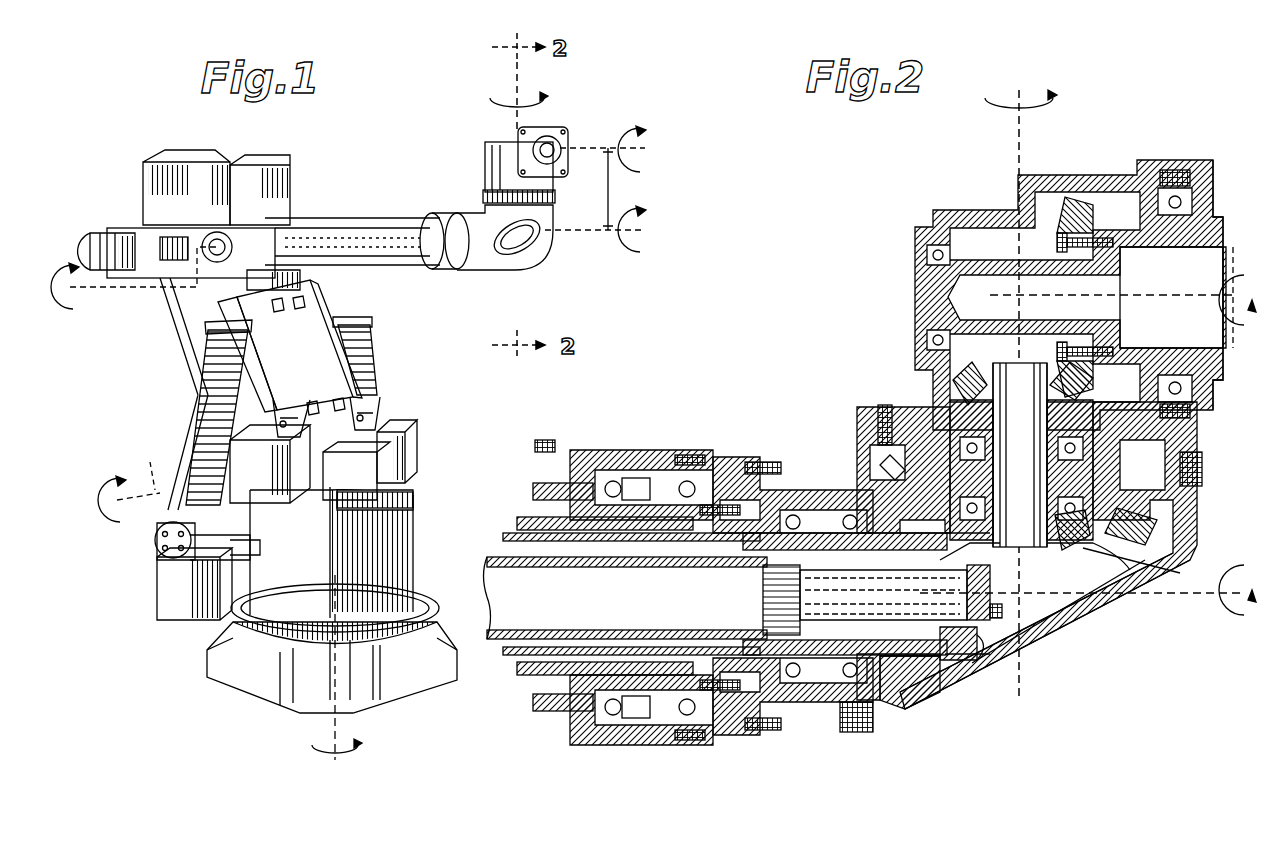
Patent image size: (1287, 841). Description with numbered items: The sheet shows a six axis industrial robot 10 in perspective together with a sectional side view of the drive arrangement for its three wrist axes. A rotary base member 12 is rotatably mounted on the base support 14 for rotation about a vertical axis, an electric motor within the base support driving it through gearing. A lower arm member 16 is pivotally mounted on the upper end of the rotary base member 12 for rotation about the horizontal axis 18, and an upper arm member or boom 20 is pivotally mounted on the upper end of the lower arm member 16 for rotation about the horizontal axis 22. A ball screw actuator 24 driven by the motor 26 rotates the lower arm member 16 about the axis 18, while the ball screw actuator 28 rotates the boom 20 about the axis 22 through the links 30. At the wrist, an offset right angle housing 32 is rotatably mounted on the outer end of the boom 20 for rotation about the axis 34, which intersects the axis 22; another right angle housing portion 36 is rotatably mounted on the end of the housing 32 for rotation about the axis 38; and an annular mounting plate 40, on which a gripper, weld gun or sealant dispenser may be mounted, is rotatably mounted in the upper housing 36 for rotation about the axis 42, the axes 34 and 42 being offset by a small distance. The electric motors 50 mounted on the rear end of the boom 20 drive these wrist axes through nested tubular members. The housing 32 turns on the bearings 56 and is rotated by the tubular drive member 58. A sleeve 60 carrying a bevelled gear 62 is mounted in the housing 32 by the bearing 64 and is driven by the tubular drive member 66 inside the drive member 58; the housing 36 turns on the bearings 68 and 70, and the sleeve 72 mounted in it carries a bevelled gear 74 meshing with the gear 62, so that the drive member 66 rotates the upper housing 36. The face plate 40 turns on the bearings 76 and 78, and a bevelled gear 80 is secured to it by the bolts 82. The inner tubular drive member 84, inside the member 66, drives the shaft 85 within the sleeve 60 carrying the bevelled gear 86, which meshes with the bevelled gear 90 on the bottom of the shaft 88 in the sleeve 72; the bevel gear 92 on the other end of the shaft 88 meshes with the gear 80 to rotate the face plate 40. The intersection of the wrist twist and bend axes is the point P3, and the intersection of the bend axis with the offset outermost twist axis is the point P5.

In FIG. 1, the industrial robot 10 is at (104, 416).
In FIG. 1, the rotary base member 12 is at (415, 522).
In FIG. 1, the base support 14 is at (245, 668).
In FIG. 1, the lower arm member 16 is at (325, 378).
In FIG. 1, the horizontal axis 18 is at (138, 469).
In FIG. 1, the upper arm member or boom 20 is at (352, 220).
In FIG. 2, the upper arm member or boom 20 is at (540, 485).
In FIG. 1, the horizontal axis 22 is at (142, 290).
In FIG. 1, the ball screw actuator 24 is at (208, 375).
In FIG. 1, the motor 26 is at (157, 575).
In FIG. 1, the ball screw actuator 28 is at (366, 346).
In FIG. 1, the links 30 is at (185, 315).
In FIG. 1, the offset right angle housing 32 is at (545, 216).
In FIG. 2, the offset right angle housing 32 is at (950, 700).
In FIG. 1, the axis 34 is at (600, 232).
In FIG. 2, the axis 34 is at (1212, 596).
In FIG. 1, the right angle housing portion 36 is at (487, 163).
In FIG. 2, the right angle housing portion 36 is at (987, 210).
In FIG. 1, the axis 38 is at (515, 118).
In FIG. 2, the axis 38 is at (1015, 110).
In FIG. 1, the annular mounting plate 40 is at (550, 148).
In FIG. 2, the annular mounting plate 40 is at (1218, 225).
In FIG. 1, the axis 42 is at (585, 145).
In FIG. 2, the axis 42 is at (1232, 262).
In FIG. 1, the electric motors 50 is at (140, 205).
In FIG. 2, the bearings 56 is at (690, 715).
In FIG. 2, the tubular drive member 58 is at (515, 505).
In FIG. 2, the sleeve 60 is at (812, 520).
In FIG. 2, the bevelled gear 62 is at (912, 700).
In FIG. 2, the bearing 64 is at (793, 680).
In FIG. 2, the tubular drive member 66 is at (513, 533).
In FIG. 2, the bearing 68 is at (1202, 470).
In FIG. 2, the bearing 70 is at (880, 470).
In FIG. 2, the sleeve 72 is at (1175, 434).
In FIG. 2, the bevelled gear 74 is at (1175, 527).
In FIG. 2, the bearing 76 is at (1172, 172).
In FIG. 2, the bearing 78 is at (917, 250).
In FIG. 2, the bevelled gear 80 is at (1068, 205).
In FIG. 2, the bolts 82 is at (1060, 238).
In FIG. 2, the inner tubular drive member 84 is at (500, 556).
In FIG. 2, the drive shaft 85 is at (835, 600).
In FIG. 2, the bevelled gear 86 is at (990, 662).
In FIG. 2, the shaft 88 is at (985, 415).
In FIG. 2, the bevelled gear 90 is at (1147, 567).
In FIG. 2, the bevel gear 92 is at (958, 375).
In FIG. 2, the point P3 is at (1020, 597).
In FIG. 2, the point P5 is at (1017, 292).